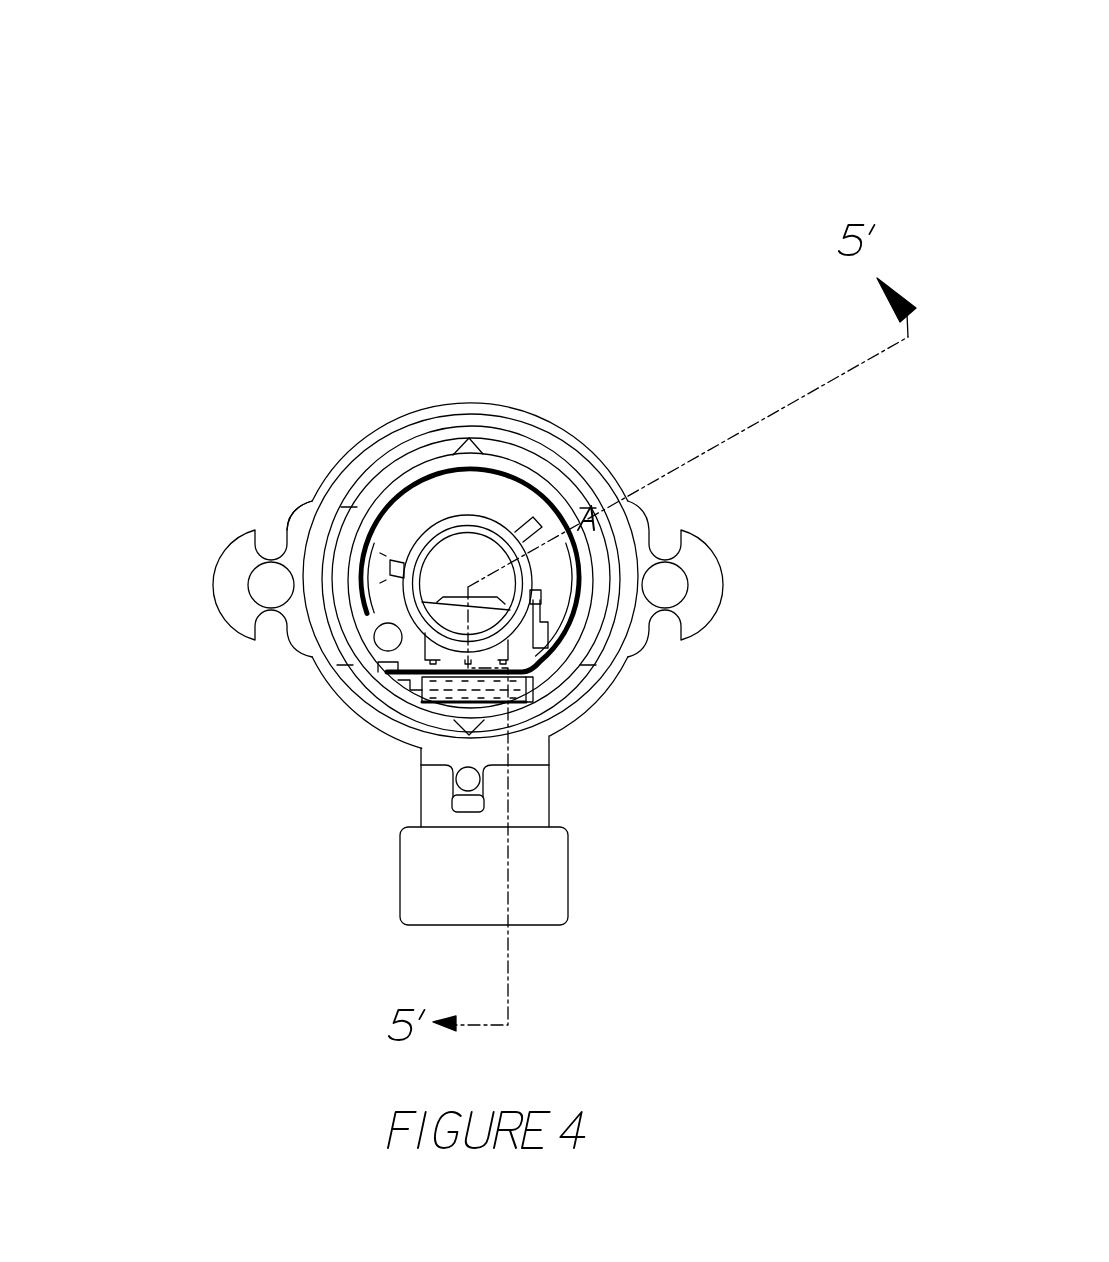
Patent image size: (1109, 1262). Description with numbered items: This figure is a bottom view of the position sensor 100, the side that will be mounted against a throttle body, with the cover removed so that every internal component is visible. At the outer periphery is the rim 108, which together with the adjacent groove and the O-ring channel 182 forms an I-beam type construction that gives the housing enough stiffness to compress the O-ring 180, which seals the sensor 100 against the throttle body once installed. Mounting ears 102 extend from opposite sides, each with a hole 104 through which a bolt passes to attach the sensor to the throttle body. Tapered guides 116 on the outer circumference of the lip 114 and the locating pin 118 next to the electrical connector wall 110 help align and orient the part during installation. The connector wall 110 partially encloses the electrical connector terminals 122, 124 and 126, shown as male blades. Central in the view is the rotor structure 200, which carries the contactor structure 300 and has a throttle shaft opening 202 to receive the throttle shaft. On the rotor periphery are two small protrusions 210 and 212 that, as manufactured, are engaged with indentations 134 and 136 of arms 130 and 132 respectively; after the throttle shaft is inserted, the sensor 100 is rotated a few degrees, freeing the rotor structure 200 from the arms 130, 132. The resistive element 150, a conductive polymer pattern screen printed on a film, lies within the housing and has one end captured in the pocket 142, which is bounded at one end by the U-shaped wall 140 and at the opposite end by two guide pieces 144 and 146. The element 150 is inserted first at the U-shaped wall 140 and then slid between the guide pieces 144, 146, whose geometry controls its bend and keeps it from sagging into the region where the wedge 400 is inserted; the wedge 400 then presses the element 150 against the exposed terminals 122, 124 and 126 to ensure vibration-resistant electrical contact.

The position sensor 100 is at (752, 68).
The mounting ears 102 is at (242, 547).
The holes 104 is at (262, 585).
The rim 108 is at (343, 460).
The electrical connector wall 110 is at (551, 882).
The lip 114 is at (442, 455).
The tapered guides 116 is at (555, 270).
The locating pin 118 is at (473, 800).
The electrical connector terminal 122 is at (568, 690).
The electrical connector terminal 124 is at (421, 790).
The electrical connector terminal 126 is at (478, 706).
The arm 130 is at (345, 643).
The arm 132 is at (552, 648).
The indentation 134 is at (403, 573).
The indentation 136 is at (548, 585).
The U-shaped wall 140 is at (372, 647).
The pocket 142 is at (420, 692).
The guide piece 144 is at (525, 676).
The guide piece 146 is at (522, 700).
The resistive element 150 is at (861, 694).
The O-ring 180 is at (407, 443).
The O-ring channel 182 is at (380, 440).
The rotor structure 200 is at (490, 533).
The throttle shaft opening 202 is at (490, 547).
The protrusion 210 is at (285, 525).
The protrusion 212 is at (653, 527).
The contactor structure 300 is at (523, 490).
The wedge 400 is at (505, 690).